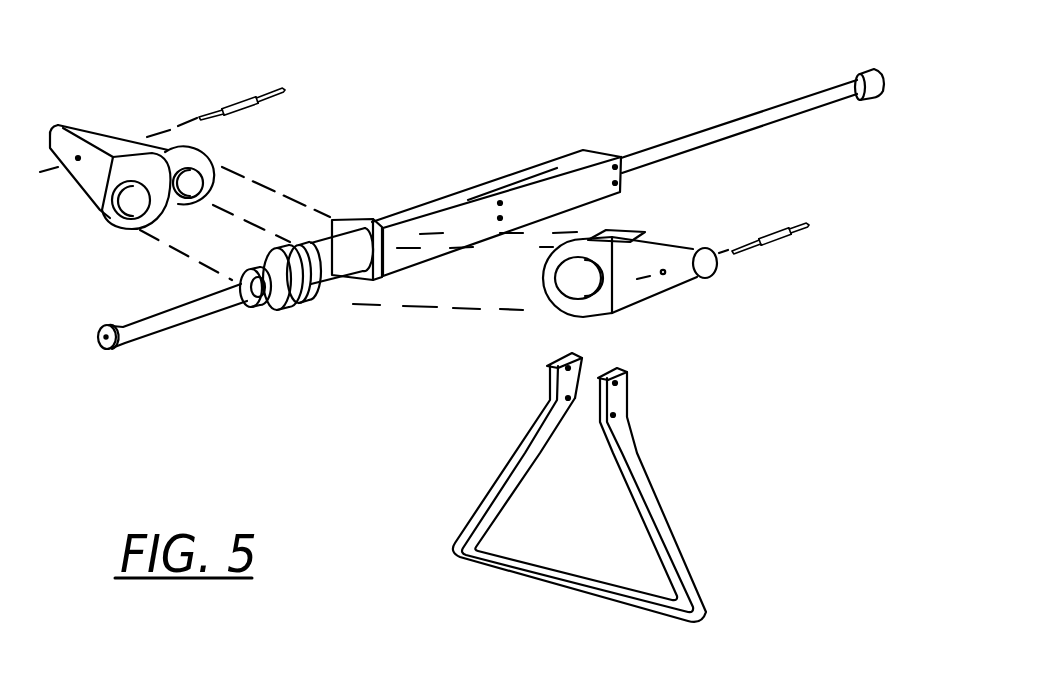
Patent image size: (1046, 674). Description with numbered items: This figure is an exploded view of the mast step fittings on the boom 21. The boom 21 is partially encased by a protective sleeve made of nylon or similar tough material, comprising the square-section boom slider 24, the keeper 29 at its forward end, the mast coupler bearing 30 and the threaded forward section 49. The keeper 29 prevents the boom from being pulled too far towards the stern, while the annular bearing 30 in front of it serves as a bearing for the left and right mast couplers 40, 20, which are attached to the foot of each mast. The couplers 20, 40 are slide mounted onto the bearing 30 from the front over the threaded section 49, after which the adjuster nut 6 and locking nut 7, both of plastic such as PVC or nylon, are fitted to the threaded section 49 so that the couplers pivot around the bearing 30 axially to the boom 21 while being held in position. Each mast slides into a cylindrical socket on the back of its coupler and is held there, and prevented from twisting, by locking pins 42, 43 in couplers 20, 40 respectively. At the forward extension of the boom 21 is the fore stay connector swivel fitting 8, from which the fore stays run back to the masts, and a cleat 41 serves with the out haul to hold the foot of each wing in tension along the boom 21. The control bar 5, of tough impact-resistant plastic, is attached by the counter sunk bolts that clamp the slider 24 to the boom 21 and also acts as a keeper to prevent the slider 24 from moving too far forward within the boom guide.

The control bar 5 is at (579, 487).
The adjuster nut 6 is at (304, 304).
The locking nut 7 is at (274, 316).
The fore stay connector swivel fitting 8 is at (170, 335).
The right mast coupler 20 is at (639, 277).
The boom 21 is at (739, 126).
The boom slider 24 is at (480, 181).
The keeper 29 is at (357, 231).
The mast coupler bearing 30 is at (338, 282).
The left mast coupler 40 is at (132, 162).
The cleat 41 is at (866, 63).
The locking pin 42 is at (770, 219).
The locking pin 43 is at (242, 89).
The threaded forward section 49 is at (277, 285).